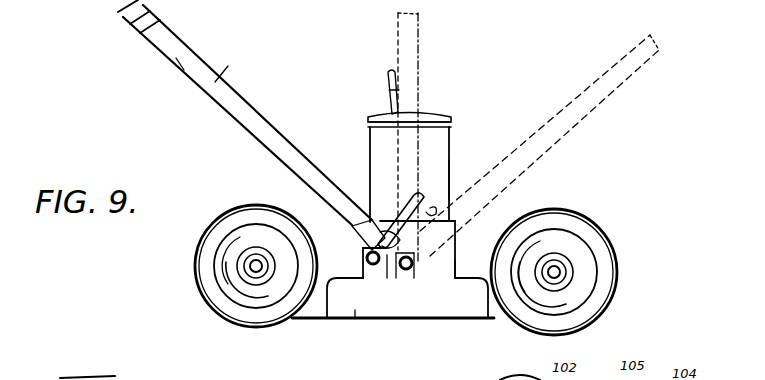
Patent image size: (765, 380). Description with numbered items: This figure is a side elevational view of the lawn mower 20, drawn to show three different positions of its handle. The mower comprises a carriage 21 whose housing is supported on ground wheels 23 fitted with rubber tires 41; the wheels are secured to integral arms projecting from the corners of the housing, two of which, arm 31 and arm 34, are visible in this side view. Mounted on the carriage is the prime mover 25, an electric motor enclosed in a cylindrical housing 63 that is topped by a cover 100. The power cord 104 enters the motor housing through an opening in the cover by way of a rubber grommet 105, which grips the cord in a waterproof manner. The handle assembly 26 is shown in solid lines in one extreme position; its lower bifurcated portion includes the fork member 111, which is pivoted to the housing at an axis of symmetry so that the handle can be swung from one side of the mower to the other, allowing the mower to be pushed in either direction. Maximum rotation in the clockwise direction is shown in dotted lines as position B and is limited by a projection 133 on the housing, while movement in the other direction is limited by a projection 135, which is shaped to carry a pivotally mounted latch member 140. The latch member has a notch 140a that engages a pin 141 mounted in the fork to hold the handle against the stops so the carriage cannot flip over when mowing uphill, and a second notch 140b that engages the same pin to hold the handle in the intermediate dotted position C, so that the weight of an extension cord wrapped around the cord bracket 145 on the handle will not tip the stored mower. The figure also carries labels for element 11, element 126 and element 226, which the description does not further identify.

The handle 11 is at (229, 62).
The lawn mower 20 is at (214, 204).
The carriage 21 is at (462, 276).
The ground wheels 23 is at (212, 280).
The prime mover 25 is at (456, 152).
The handle assembly 26 is at (232, 118).
The arm 31 is at (493, 313).
The arm 34 is at (312, 312).
The rubber tires 41 is at (198, 254).
The cylindrical housing 63 is at (370, 153).
The cover 100 is at (432, 113).
The power cord 104 is at (382, 78).
The grommet 105 is at (378, 97).
The fork member 111 is at (180, 68).
The pivot pin 126 is at (412, 279).
The projection 133 is at (428, 281).
The projection 135 is at (363, 265).
The latch member 140 is at (358, 223).
The notch 140a is at (372, 247).
The notch 140b is at (410, 214).
The pin 141 is at (392, 272).
The cord bracket 145 is at (141, 30).
The base bracket 226 is at (357, 312).
The position B is at (628, 50).
The position C is at (413, 53).